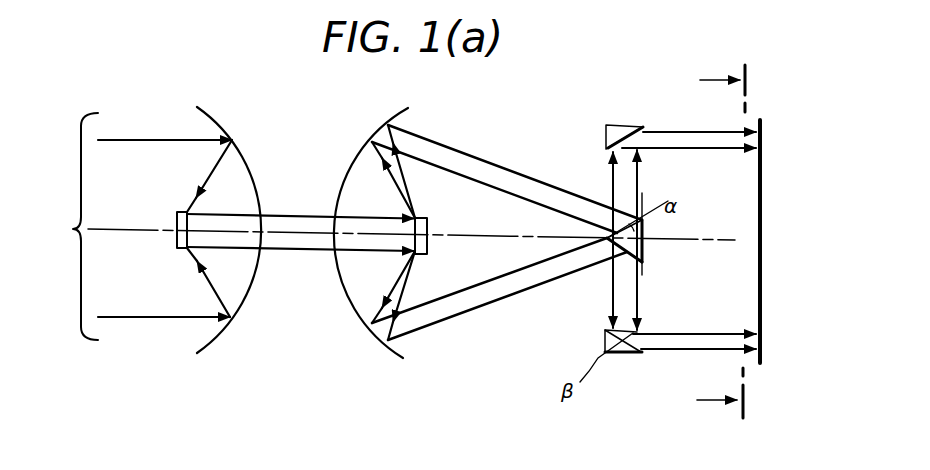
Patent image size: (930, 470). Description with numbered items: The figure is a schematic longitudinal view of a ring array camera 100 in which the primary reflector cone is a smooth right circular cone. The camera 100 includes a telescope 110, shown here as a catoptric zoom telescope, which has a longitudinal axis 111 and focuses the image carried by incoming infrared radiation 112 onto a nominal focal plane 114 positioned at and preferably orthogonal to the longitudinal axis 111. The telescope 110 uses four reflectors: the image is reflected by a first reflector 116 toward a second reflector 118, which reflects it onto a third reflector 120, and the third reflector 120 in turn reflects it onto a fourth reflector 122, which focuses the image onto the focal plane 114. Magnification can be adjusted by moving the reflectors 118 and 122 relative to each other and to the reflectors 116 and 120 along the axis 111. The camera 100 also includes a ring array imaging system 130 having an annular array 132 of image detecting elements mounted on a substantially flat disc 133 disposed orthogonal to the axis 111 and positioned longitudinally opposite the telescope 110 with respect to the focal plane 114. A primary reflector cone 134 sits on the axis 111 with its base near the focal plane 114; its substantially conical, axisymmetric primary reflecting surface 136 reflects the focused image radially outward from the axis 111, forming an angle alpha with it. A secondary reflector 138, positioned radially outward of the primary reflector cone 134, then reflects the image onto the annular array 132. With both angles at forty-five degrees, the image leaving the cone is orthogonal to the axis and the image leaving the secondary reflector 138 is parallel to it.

The ring array camera 100 is at (489, 124).
The telescope 110 is at (298, 297).
The longitudinal axis 111 is at (274, 231).
The incoming infrared radiation 112 is at (139, 226).
The nominal focal plane 114 is at (644, 268).
The first reflector 116 is at (249, 172).
The second reflector 118 is at (175, 245).
The third reflector 120 is at (428, 253).
The fourth reflector 122 is at (355, 302).
The ring array imaging system 130 is at (640, 372).
The annular array of image detecting elements 132 is at (757, 157).
The flat disc 133 is at (768, 157).
The primary reflector cone 134 is at (613, 261).
The primary reflecting surface 136 is at (637, 243).
The secondary reflector 138 is at (625, 122).